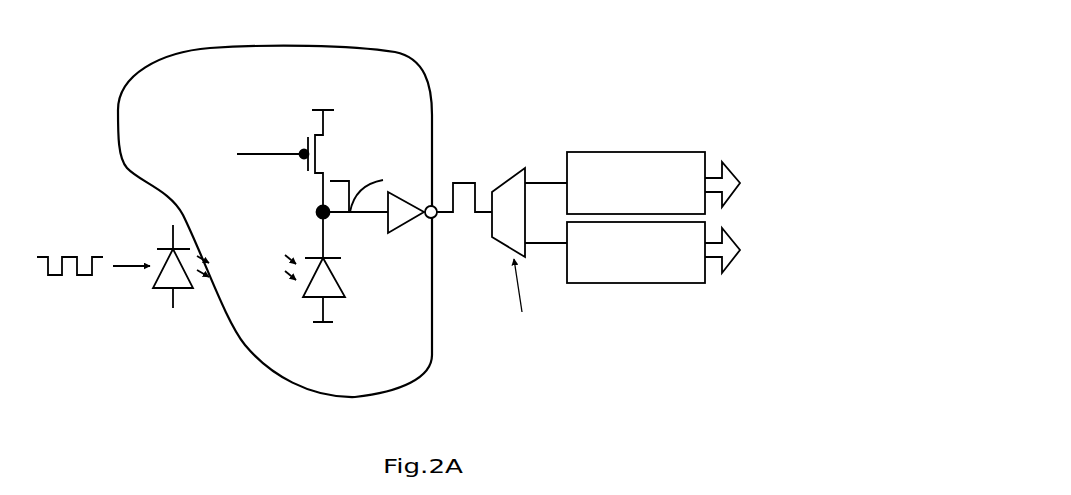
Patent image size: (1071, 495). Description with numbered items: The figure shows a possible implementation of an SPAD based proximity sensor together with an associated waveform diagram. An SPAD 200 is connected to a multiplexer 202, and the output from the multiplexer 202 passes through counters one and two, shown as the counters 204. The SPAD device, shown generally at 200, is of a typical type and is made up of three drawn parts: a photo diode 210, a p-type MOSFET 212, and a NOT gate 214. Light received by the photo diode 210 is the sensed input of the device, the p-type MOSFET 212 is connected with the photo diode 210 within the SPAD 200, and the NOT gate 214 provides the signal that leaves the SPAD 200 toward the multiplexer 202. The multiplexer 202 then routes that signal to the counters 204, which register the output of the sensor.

The SPAD 200 is at (446, 88).
The multiplexer 202 is at (526, 247).
The counters 1 and 2 204 is at (663, 152).
The photo diode 210 is at (313, 300).
The p-type MOSFET 212 is at (304, 143).
The NOT gate 214 is at (407, 219).